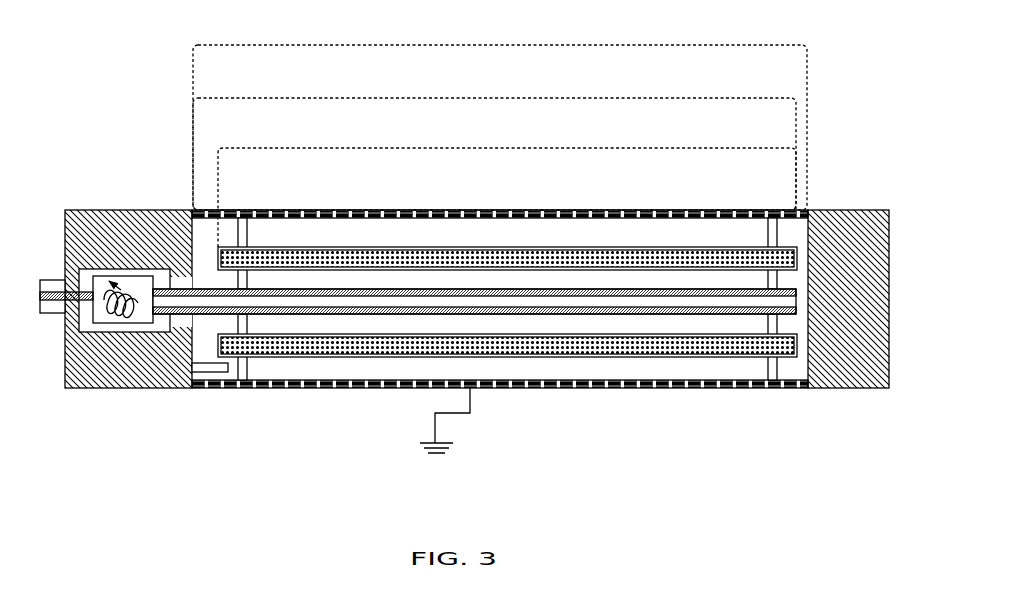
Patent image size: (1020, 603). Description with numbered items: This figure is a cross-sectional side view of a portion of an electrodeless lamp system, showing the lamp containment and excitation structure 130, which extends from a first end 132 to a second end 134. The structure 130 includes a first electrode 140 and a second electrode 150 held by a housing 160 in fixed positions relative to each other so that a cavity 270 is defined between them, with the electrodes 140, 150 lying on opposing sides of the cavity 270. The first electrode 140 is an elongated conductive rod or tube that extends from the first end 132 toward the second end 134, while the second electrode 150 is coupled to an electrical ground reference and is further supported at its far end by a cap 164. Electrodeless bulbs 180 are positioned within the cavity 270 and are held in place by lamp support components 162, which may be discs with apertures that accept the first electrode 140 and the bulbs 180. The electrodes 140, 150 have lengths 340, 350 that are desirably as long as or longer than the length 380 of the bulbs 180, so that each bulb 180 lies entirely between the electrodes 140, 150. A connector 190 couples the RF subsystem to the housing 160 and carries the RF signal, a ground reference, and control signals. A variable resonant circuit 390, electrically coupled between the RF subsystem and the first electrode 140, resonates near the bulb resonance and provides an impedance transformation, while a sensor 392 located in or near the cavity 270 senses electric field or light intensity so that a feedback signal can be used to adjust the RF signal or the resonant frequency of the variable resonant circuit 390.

The lamp containment and excitation structure 130 is at (469, 229).
The first end 132 is at (65, 384).
The second end 134 is at (853, 297).
The first electrode 140 is at (518, 315).
The second electrode 150 is at (518, 210).
The housing 160 is at (172, 210).
The lamp support components 162 is at (250, 235).
The cap 164 is at (823, 210).
The electrodeless bulbs 180 is at (321, 247).
The connector 190 is at (52, 280).
The cavity 270 is at (677, 367).
The length of first electrode 340 is at (479, 98).
The length of second electrode 350 is at (531, 45).
The length of electrodeless bulbs 380 is at (416, 148).
The variable resonant circuit 390 is at (130, 277).
The sensor 392 is at (205, 373).